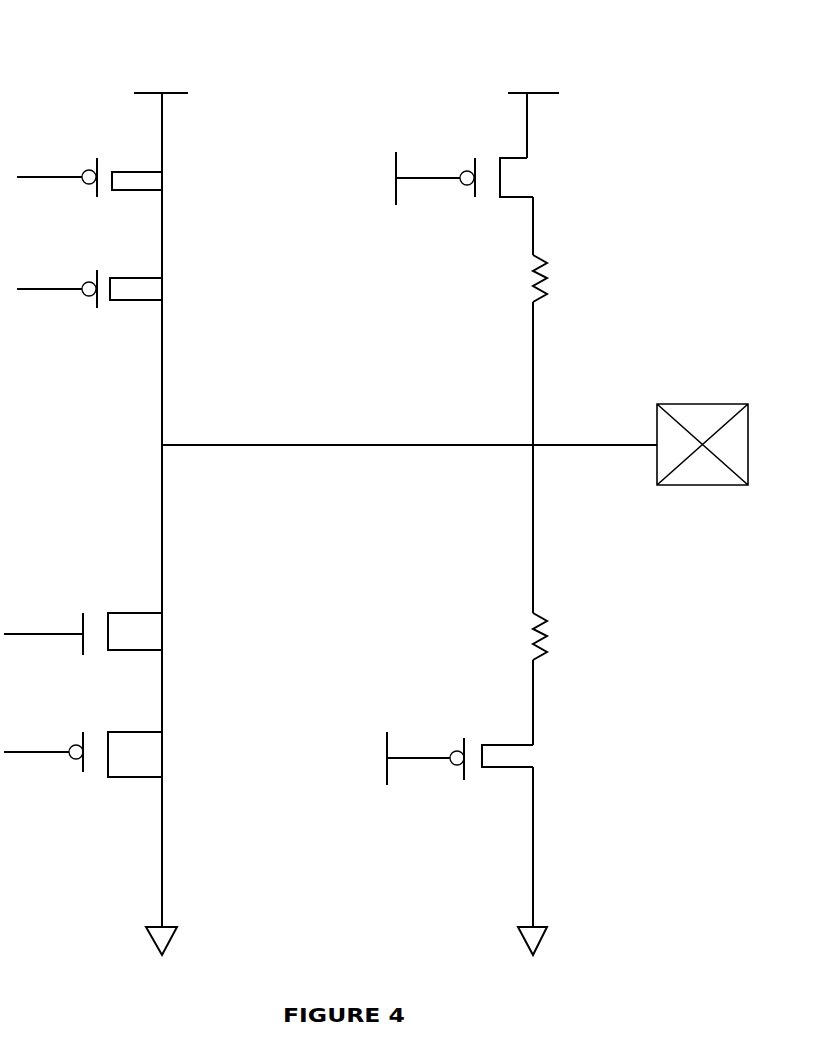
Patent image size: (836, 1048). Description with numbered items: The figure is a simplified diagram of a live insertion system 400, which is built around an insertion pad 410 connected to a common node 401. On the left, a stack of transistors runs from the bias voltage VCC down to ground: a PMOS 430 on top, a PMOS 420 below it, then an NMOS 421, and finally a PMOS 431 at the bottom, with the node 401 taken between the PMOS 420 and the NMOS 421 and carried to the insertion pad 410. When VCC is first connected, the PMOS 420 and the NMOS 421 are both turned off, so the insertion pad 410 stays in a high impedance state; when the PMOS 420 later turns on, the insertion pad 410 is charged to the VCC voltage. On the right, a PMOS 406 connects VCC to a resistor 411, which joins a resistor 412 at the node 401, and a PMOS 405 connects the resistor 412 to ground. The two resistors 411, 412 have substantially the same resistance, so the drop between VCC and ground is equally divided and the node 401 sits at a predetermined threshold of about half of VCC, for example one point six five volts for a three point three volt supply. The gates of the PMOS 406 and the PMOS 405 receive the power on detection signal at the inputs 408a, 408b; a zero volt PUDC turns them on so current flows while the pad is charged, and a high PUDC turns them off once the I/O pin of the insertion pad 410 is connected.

The live insertion system 400 is at (411, 487).
The node 401 is at (535, 435).
The PMOS 405 is at (535, 723).
The PMOS 406 is at (528, 140).
The PUDC control signal input 408a is at (428, 212).
The PUDC control signal input 408b is at (378, 705).
The insertion pad 410 is at (748, 428).
The resistor 411 is at (575, 253).
The resistor 412 is at (573, 622).
The PMOS 420 is at (29, 270).
The NMOS 421 is at (22, 623).
The PMOS 430 is at (29, 167).
The PMOS 431 is at (16, 743).